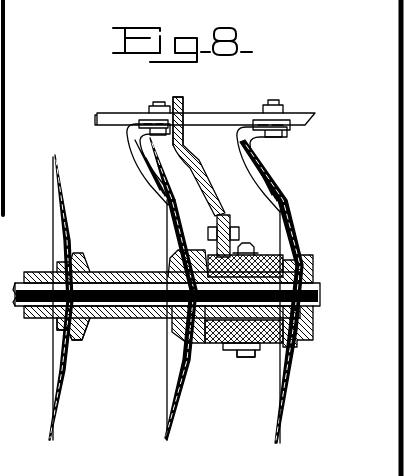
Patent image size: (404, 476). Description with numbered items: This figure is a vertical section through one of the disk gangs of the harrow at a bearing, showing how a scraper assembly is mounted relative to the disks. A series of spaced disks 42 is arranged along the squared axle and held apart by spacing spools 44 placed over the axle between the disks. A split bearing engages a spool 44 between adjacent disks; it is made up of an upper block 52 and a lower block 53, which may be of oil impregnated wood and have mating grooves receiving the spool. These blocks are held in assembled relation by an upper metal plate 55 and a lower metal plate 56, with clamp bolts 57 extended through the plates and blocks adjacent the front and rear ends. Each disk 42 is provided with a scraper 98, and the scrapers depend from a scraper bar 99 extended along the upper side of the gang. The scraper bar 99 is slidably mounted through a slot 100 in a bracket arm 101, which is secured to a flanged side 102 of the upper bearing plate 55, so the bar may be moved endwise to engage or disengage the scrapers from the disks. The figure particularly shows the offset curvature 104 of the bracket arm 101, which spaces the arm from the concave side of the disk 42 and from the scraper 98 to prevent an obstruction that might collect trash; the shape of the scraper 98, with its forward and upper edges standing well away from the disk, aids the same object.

The disk 42 is at (167, 388).
The spacing spool 44 is at (103, 325).
The upper block 52 is at (187, 247).
The lower block 53 is at (190, 345).
The upper metal plate 55 is at (252, 255).
The lower metal plate 56 is at (228, 355).
The clamp bolt 57 is at (238, 355).
The scraper 98 is at (160, 172).
The scraper bar 99 is at (97, 118).
The slot 100 is at (188, 112).
The bracket arm 101 is at (190, 84).
The flanged side 102 is at (223, 217).
The offset curvature 104 is at (180, 217).